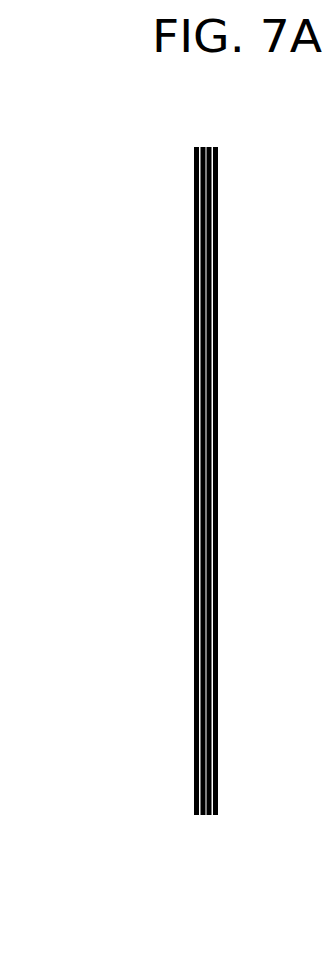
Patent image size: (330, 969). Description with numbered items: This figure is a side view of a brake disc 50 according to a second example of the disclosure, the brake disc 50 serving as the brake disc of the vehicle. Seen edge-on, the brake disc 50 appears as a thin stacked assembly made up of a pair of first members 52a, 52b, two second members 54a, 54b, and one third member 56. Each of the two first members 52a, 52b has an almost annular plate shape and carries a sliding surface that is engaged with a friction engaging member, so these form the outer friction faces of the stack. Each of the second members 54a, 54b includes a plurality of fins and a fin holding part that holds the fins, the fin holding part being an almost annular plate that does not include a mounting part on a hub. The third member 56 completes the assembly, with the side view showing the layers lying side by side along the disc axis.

The brake disc 50 is at (243, 154).
The first member 52a is at (195, 238).
The first member 52b is at (218, 237).
The second member 54a is at (202, 817).
The second member 54b is at (210, 818).
The third member 56 is at (207, 147).